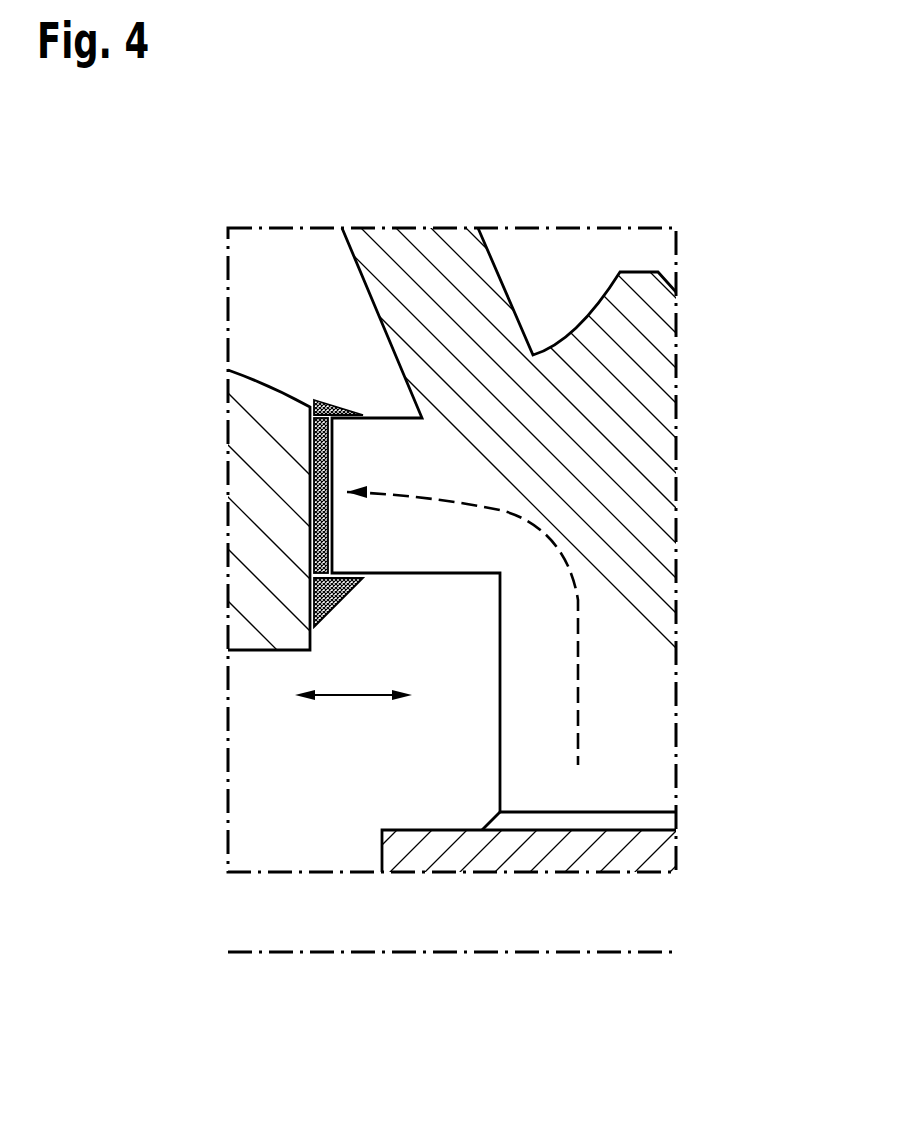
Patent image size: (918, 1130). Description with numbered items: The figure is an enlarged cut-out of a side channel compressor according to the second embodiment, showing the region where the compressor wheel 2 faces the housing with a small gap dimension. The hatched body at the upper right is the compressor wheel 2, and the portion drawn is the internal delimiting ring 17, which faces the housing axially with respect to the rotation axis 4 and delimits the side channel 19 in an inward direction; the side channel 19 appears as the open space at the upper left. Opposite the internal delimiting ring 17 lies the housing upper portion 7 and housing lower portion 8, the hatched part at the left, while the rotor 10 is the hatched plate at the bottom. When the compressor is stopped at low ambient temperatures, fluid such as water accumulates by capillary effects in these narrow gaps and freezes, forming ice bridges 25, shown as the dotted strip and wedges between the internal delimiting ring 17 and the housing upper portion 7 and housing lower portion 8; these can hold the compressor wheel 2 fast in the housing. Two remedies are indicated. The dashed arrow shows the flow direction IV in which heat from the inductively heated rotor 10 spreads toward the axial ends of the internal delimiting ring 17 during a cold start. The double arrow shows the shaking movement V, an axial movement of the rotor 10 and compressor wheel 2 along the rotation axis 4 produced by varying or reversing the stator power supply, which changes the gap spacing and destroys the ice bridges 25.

The compressor wheel 2 is at (459, 551).
The rotation axis 4 is at (455, 953).
The housing upper portion 7 is at (242, 439).
The housing lower portion 8 is at (268, 620).
The rotor 10 is at (641, 852).
The internal delimiting ring 17 is at (410, 462).
The side channel 19 is at (268, 303).
The ice bridges 25 is at (312, 405).
The flow direction IV is at (578, 598).
The shaking movement V is at (355, 697).